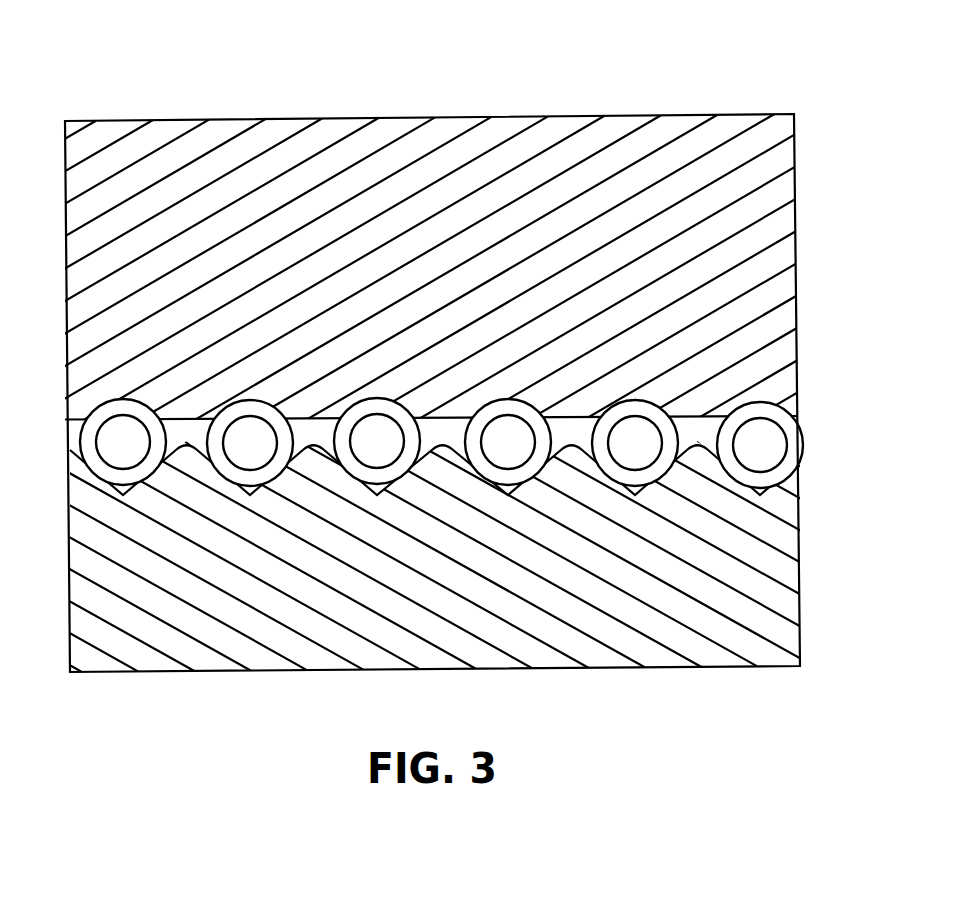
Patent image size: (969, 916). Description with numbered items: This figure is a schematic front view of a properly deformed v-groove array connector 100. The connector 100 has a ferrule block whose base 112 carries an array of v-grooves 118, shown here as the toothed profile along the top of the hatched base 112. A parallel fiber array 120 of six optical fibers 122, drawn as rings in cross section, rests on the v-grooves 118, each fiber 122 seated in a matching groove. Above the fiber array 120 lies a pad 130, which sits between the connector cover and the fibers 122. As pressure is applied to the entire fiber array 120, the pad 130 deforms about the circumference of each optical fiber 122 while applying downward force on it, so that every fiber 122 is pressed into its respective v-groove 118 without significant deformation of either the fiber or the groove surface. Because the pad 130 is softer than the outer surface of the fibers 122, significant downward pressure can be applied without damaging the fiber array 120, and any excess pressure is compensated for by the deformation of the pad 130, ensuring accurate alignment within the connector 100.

The connector 100 is at (458, 80).
The base 112 is at (716, 632).
The v-grooves 118 is at (188, 462).
The fiber array 120 is at (805, 405).
The fiber 122 is at (509, 440).
The pad 130 is at (207, 137).